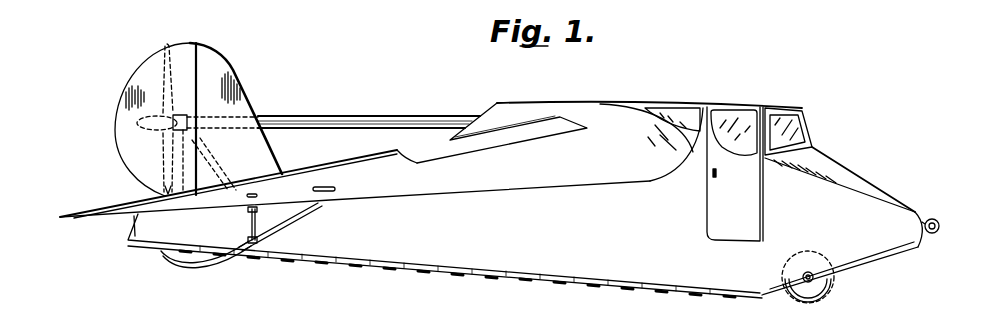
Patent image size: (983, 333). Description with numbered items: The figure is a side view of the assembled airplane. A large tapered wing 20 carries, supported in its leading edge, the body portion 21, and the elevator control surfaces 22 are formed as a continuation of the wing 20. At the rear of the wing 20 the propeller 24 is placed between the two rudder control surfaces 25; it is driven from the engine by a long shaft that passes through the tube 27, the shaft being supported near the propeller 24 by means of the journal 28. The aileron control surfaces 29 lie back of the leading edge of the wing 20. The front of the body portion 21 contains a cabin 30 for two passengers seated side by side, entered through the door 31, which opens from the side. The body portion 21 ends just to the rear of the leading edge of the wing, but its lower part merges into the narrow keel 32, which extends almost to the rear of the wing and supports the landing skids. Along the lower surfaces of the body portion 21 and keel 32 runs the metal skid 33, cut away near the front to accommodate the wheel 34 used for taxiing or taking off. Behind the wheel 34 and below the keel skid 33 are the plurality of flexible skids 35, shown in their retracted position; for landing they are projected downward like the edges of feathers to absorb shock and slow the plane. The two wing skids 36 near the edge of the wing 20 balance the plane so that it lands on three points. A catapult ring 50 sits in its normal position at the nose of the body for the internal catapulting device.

The wing 20 is at (657, 127).
The body portion 21 is at (900, 223).
The elevator control surfaces 22 is at (102, 212).
The propeller 24 is at (167, 43).
The rudder control surfaces 25 is at (140, 70).
The tube 27 is at (360, 115).
The propeller hub 28 is at (190, 137).
The aileron control surfaces 29 is at (510, 133).
The cabin 30 is at (760, 107).
The door 31 is at (742, 232).
The keel 32 is at (343, 244).
The metal skid 33 is at (880, 263).
The wheel 34 is at (823, 297).
The flexible skids 35 is at (457, 281).
The wing skids 36 is at (167, 260).
The catapult ring 50 is at (930, 233).